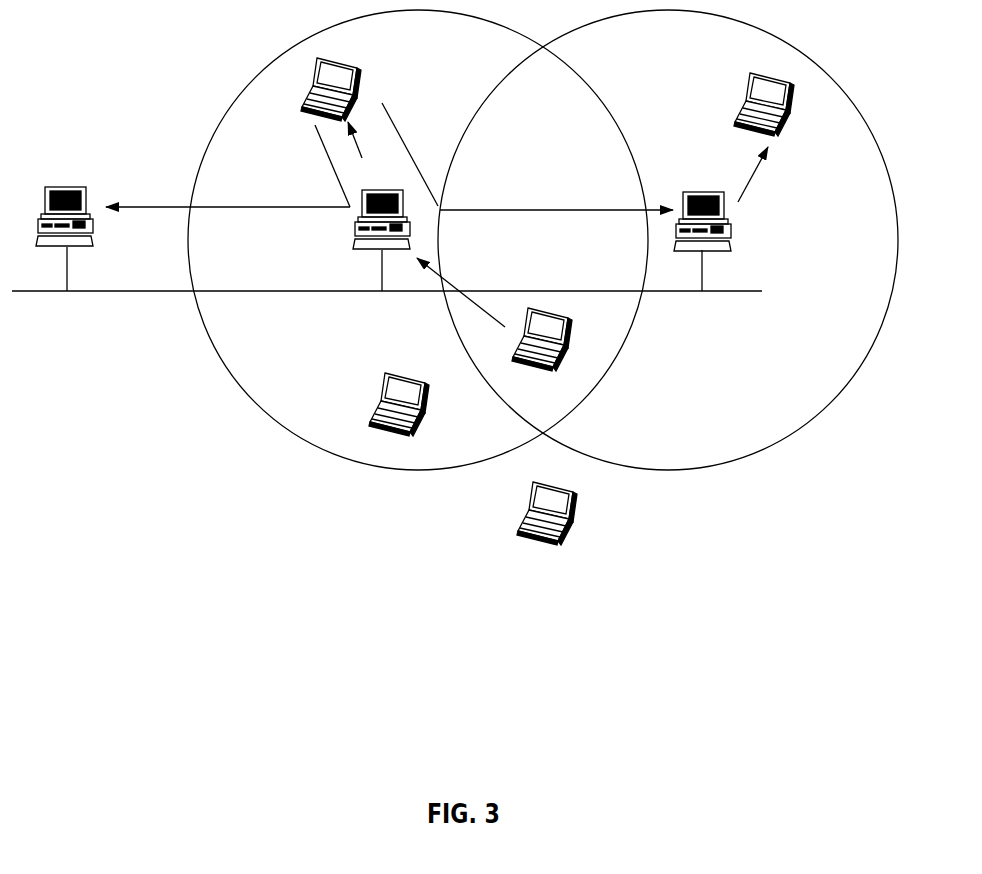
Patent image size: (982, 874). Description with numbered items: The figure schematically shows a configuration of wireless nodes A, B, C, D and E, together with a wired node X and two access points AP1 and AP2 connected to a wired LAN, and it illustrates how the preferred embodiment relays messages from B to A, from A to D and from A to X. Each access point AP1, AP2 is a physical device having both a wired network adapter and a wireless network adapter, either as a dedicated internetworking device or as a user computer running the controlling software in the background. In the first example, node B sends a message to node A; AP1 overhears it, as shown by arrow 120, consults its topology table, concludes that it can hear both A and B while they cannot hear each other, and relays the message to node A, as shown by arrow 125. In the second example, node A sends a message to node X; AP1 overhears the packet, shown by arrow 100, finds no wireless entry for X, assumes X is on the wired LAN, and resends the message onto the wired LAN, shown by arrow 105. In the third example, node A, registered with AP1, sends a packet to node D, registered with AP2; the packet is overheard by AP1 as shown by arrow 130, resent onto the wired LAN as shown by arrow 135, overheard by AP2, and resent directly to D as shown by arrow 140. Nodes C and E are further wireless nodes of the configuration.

The arrow 100 is at (337, 167).
The arrow 105 is at (290, 208).
The arrow 120 is at (492, 312).
The arrow 125 is at (361, 152).
The arrow 130 is at (407, 143).
The arrow 135 is at (512, 210).
The arrow 140 is at (747, 186).
The wired node X is at (64, 201).
The access point AP1 is at (381, 207).
The access point AP2 is at (702, 207).
The wireless node A is at (343, 79).
The wireless node B is at (542, 357).
The wireless node C is at (562, 513).
The wireless node D is at (780, 104).
The wireless node E is at (399, 419).